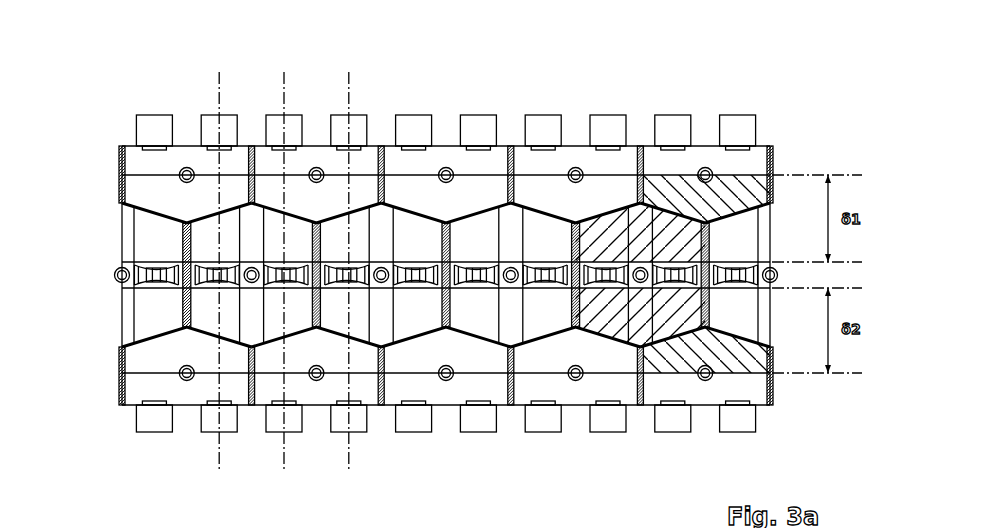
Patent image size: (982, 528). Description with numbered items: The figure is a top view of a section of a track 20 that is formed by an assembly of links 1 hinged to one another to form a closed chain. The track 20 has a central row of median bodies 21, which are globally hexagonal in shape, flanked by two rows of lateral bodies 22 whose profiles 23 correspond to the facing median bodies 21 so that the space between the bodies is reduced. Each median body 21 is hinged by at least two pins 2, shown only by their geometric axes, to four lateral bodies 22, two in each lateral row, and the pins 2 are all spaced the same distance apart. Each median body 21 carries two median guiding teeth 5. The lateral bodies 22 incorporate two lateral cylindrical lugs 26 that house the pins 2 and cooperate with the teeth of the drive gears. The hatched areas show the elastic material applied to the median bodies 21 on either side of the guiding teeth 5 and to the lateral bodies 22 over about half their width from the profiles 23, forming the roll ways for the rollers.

The link 1 is at (313, 108).
The pin 2 is at (220, 450).
The median guiding tooth 5 is at (537, 252).
The track 20 is at (803, 85).
The median body 21 is at (210, 242).
The lateral body 22 is at (578, 157).
The profile 23 is at (752, 209).
The lateral cylindrical lug 26 is at (270, 122).